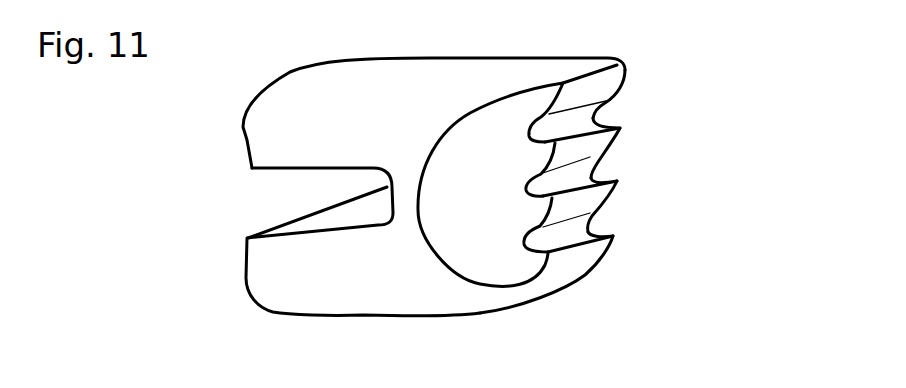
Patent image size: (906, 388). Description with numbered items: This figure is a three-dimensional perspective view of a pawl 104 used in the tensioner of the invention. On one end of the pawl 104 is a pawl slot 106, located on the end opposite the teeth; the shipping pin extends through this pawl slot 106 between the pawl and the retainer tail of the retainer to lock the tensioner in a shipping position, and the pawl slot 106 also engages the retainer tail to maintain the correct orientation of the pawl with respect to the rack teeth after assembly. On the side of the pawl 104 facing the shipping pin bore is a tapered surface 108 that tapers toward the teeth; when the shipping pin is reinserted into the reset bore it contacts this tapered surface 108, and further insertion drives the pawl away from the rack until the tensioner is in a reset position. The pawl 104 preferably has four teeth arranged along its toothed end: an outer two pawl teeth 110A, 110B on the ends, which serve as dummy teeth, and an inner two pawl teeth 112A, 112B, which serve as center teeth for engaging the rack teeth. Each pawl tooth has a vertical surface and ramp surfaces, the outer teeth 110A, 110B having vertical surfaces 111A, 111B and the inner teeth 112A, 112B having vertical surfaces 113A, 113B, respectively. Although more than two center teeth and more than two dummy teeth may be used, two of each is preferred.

The pawl 104 is at (382, 130).
The pawl slot 106 is at (343, 213).
The tapered surface 108 is at (492, 215).
The pawl tooth 110A is at (607, 87).
The pawl tooth 110B is at (595, 253).
The vertical surface 111A is at (589, 74).
The vertical surface 111B is at (582, 242).
The pawl tooth 112A is at (587, 147).
The pawl tooth 112B is at (585, 204).
The vertical surface 113A is at (622, 129).
The vertical surface 113B is at (605, 189).